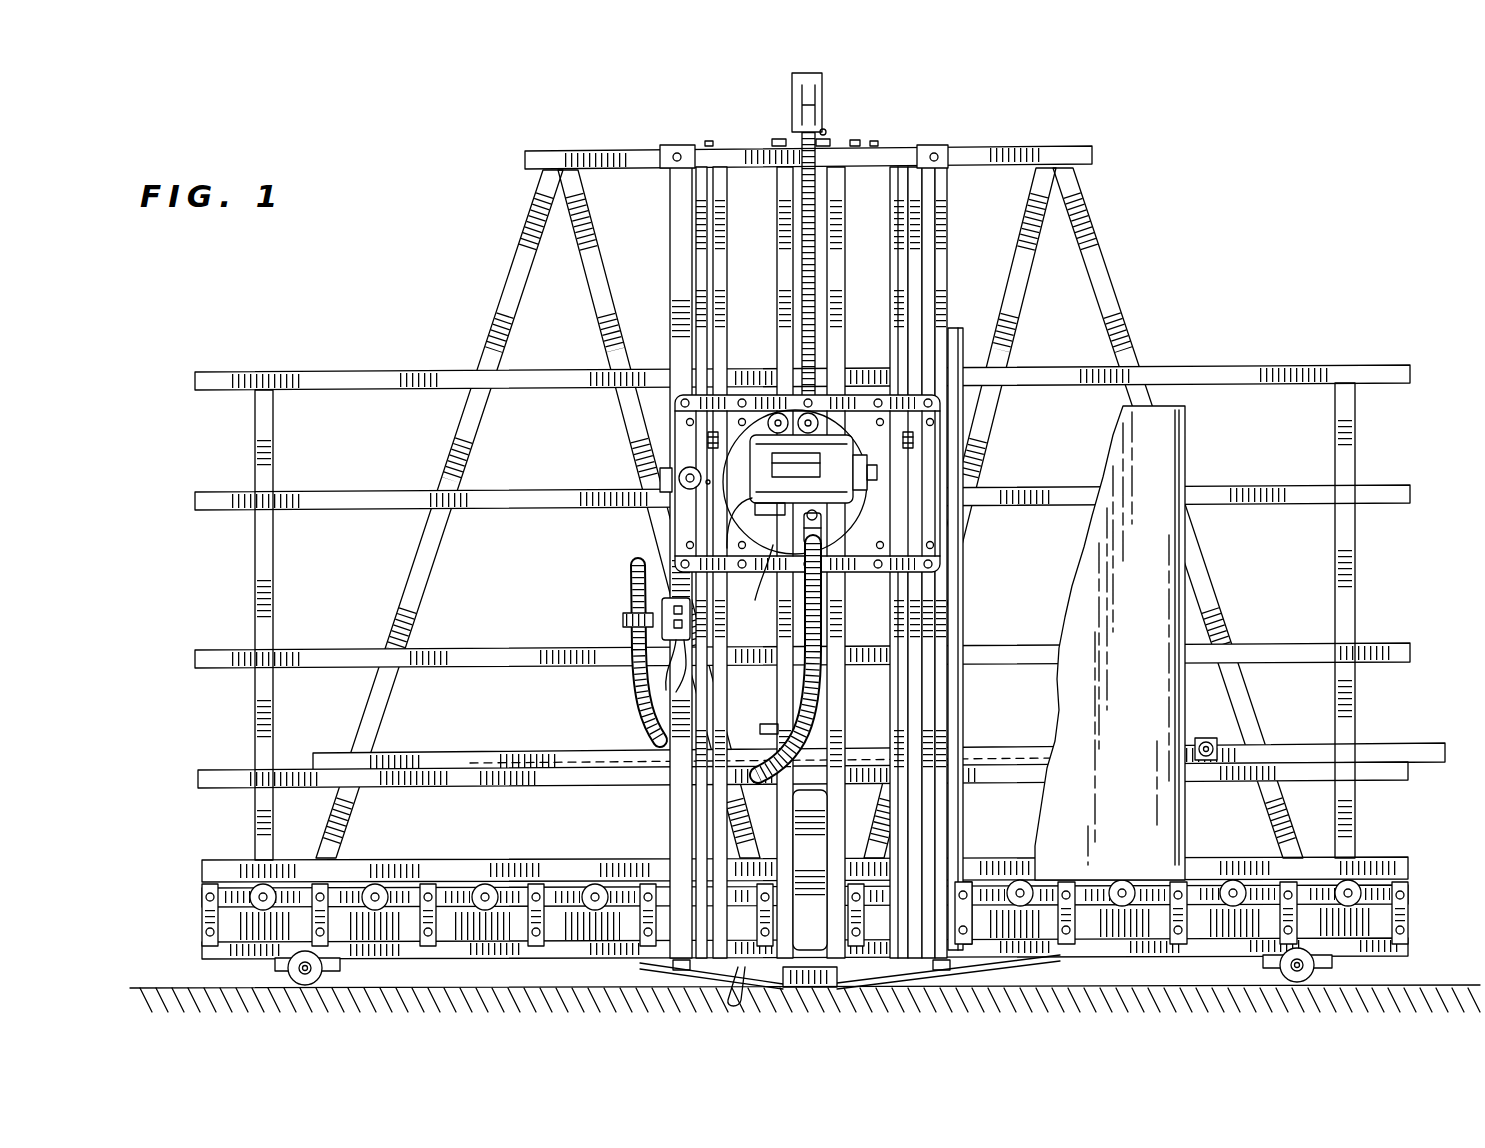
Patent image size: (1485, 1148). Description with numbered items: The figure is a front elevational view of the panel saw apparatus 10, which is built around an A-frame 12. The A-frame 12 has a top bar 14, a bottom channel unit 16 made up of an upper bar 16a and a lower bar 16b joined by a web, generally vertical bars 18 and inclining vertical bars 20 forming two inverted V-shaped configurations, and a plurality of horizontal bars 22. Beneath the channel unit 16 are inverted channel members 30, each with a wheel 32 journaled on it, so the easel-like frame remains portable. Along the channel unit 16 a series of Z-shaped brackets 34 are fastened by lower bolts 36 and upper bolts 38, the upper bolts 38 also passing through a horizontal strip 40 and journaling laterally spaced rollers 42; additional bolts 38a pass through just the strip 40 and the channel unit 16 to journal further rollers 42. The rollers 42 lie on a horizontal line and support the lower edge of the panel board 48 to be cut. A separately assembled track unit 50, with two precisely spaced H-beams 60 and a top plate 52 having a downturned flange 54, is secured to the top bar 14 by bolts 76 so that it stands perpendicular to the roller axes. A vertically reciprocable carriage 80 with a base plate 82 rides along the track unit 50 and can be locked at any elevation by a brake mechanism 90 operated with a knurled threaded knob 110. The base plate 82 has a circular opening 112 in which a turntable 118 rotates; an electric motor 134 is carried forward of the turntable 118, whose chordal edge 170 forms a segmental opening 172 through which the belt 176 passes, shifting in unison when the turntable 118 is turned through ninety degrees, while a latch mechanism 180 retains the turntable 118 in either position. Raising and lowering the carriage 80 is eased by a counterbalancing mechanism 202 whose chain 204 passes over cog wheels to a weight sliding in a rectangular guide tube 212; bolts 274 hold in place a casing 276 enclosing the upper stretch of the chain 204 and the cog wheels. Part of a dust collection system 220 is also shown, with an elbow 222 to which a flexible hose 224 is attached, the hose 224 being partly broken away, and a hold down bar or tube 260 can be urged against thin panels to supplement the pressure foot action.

The panel saw apparatus 10 is at (1208, 246).
The A-frame 12 is at (1284, 332).
The top bar 14 is at (640, 150).
The bottom channel unit 16 is at (790, 895).
The upper bar 16a is at (250, 858).
The lower bar 16b is at (205, 960).
The generally vertical bars 18 is at (445, 440).
The inclining vertical bars 20 is at (620, 407).
The horizontal bars 22 is at (345, 372).
The inverted channel members 30 is at (345, 972).
The wheel 32 is at (282, 972).
The brackets 34 is at (435, 925).
The bolts 36 is at (435, 945).
The bolt 38 is at (428, 884).
The additional bolts 38a is at (478, 885).
The horizontal strip 40 is at (345, 880).
The rollers 42 is at (490, 890).
The panel board 48 is at (1192, 445).
The track unit 50 is at (928, 246).
The top plate 52 is at (680, 146).
The downturned flange 54 is at (925, 160).
The H-beams 60 is at (730, 260).
The bolts 76 is at (870, 145).
The carriage 80 is at (946, 470).
The base plate 82 is at (922, 545).
The brake mechanism 90 is at (664, 481).
The knurled threaded knob 110 is at (678, 468).
The circular opening 112 is at (755, 600).
The turntable 118 is at (855, 530).
The electric motor 134 is at (690, 525).
The chordal edge 170 is at (900, 520).
The segmental opening 172 is at (860, 503).
The belt 176 is at (870, 480).
The latch mechanism 180 is at (770, 410).
The counterbalancing mechanism 202 is at (826, 95).
The chain 204 is at (815, 265).
The rectangular guide tube 212 is at (760, 730).
The dust collection system 220 is at (632, 706).
The elbow 222 is at (830, 525).
The flexible hose 224 is at (632, 578).
The hold down bar or tube 260 is at (965, 635).
The bolts 274 is at (780, 140).
The sprocket 276 is at (845, 117).